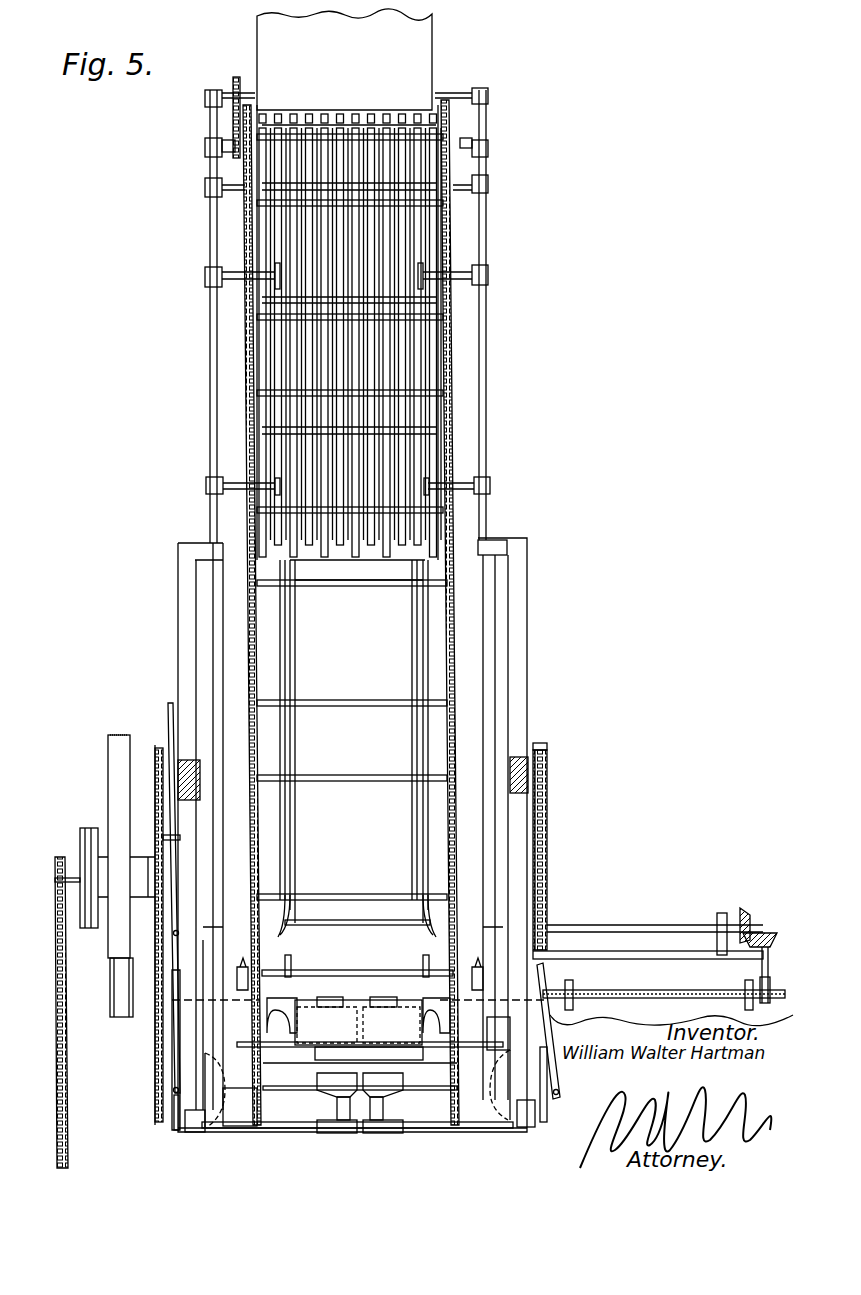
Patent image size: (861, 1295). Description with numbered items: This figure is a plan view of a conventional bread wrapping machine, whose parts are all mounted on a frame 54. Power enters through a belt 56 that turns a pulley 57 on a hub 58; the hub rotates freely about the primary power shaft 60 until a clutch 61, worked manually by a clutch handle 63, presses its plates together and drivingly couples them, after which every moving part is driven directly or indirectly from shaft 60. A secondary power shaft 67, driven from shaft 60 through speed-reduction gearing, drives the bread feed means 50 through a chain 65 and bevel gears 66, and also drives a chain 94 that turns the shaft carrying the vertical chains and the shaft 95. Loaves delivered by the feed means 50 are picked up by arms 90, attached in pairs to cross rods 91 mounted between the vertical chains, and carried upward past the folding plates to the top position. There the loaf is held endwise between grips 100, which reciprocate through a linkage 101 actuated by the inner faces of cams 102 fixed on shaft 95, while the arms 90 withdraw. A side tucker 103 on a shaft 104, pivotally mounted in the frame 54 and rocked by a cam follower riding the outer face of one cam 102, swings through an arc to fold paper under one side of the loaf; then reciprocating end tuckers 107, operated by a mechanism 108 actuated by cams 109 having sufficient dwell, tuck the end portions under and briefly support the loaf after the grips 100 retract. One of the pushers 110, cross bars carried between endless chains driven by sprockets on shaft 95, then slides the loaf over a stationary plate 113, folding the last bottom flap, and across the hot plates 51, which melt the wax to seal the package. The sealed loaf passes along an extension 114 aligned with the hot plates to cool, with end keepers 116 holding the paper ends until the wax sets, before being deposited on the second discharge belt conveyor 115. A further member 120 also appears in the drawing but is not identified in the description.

The second discharge belt conveyor 115 is at (344, 59).
The extension 114 is at (402, 248).
The end keepers 116 is at (273, 375).
The pushers 110 is at (415, 320).
The frame 54 is at (524, 640).
The chain 94 is at (157, 1032).
The hot plates 51 is at (424, 842).
The stationary plate 113 is at (403, 936).
The grips 100 is at (423, 957).
The end tuckers 107 is at (302, 991).
The side tucker 103 is at (410, 1003).
The arms 90 is at (332, 1033).
The shaft 104 is at (405, 1056).
The cross rods 91 is at (295, 1126).
The shaft 95 is at (251, 1095).
The linkage 101 is at (248, 975).
The cams 102 is at (222, 1126).
The mechanism 108 is at (160, 1102).
The cams 109 is at (176, 1130).
The drive bar 120 is at (55, 953).
The shaft 60 is at (72, 870).
The clutch 61 is at (84, 820).
The pulley 57 is at (108, 750).
The belt 56 is at (120, 1013).
The hub 58 is at (140, 870).
The clutch handle 63 is at (168, 718).
The chain 65 is at (545, 825).
The secondary power shaft 67 is at (535, 743).
The bevel gears 66 is at (765, 933).
The bread feed means 50 is at (601, 979).